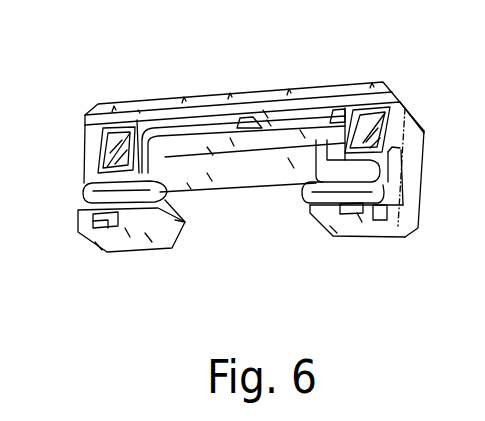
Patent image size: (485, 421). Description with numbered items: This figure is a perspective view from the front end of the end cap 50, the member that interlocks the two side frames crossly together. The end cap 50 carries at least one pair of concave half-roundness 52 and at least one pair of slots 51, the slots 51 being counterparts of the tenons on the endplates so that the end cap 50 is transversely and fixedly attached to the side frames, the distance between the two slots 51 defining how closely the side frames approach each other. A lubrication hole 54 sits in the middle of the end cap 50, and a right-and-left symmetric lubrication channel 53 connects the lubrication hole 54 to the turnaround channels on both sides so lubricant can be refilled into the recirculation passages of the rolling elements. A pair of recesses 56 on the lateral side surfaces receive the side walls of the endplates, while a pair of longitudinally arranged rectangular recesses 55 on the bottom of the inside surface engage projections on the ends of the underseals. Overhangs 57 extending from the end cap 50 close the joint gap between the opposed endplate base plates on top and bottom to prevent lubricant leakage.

The end cap 50 is at (215, 96).
The slot 51 is at (115, 153).
The concave half-roundness 52 is at (118, 198).
The lubrication channel 53 is at (319, 100).
The lubrication hole 54 is at (250, 105).
The rectangular recess 55 is at (342, 238).
The recess 56 is at (397, 238).
The overhang 57 is at (138, 110).